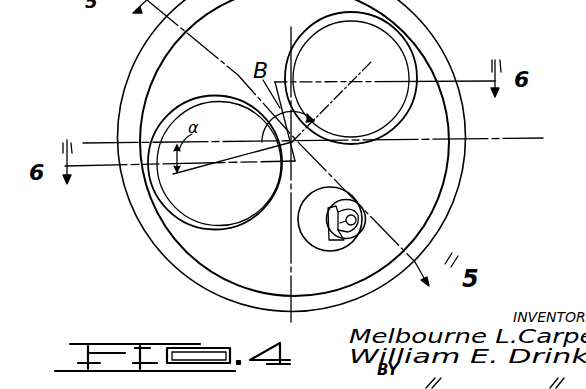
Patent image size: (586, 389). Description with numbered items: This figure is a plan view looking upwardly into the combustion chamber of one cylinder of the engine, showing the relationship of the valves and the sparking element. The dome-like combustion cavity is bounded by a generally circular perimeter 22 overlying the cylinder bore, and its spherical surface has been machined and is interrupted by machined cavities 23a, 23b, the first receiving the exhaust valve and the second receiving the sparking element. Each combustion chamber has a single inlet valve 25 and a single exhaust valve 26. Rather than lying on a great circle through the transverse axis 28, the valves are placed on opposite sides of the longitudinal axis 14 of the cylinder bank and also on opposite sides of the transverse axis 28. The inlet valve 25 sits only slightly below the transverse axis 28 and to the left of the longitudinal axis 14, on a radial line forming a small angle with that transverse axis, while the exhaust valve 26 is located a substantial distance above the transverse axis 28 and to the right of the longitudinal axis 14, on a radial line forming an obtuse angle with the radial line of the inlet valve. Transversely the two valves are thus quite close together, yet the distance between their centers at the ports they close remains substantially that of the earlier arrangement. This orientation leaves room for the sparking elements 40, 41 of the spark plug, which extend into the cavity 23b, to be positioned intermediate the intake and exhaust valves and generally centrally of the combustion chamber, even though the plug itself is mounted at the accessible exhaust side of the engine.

The longitudinal axis 14 is at (290, 30).
The circular perimeter 22 is at (152, 73).
The machined cavity for exhaust valve 23a is at (406, 112).
The machined cavity for sparking element 23b is at (301, 225).
The inlet valve 25 is at (238, 201).
The exhaust valve 26 is at (373, 114).
The transverse axis 28 is at (501, 140).
The sparking element 40 is at (345, 200).
The sparking element 41 is at (353, 214).